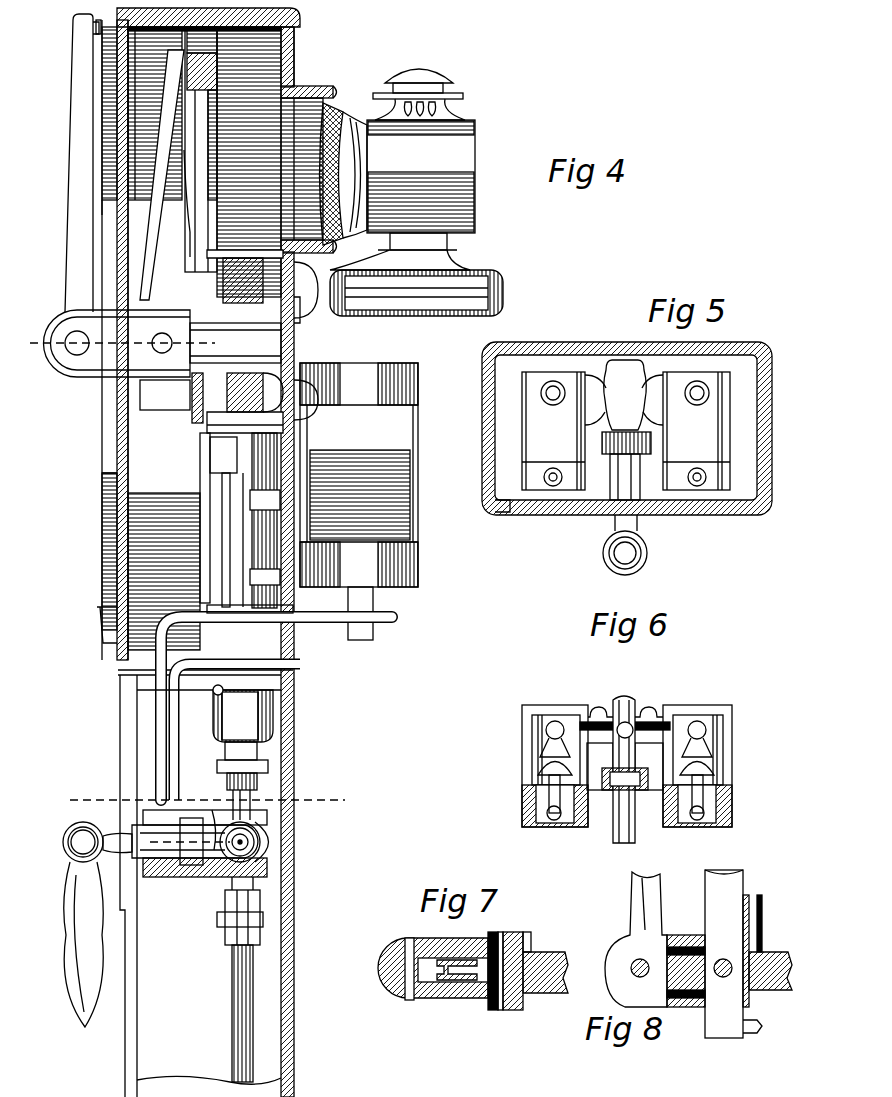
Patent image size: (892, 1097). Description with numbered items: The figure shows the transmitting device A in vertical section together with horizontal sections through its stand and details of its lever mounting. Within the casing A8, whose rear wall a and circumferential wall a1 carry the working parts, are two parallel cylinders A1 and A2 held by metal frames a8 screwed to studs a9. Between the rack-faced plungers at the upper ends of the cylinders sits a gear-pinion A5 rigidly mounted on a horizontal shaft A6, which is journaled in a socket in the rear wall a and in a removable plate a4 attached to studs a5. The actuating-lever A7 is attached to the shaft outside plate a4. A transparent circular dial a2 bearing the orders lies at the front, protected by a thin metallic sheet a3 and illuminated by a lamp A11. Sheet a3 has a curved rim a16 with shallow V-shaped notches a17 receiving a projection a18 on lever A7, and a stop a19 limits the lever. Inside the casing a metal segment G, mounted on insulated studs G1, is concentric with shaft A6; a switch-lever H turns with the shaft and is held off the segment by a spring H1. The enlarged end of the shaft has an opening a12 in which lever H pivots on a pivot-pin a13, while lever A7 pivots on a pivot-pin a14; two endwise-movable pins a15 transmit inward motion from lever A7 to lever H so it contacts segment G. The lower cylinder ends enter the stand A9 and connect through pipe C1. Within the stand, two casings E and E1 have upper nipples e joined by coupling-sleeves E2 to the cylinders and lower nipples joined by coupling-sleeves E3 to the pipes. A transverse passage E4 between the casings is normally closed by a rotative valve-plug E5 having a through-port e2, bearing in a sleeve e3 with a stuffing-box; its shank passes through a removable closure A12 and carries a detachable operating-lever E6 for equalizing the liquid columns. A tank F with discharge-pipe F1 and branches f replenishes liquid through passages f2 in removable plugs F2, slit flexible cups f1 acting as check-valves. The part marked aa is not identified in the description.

In FIG. 4, the main casing A is at (343, 346).
In FIG. 4, the cylinder A1 is at (240, 683).
In FIG. 4, the cylinder A2 is at (73, 237).
In FIG. 4, the gear-pinion A5 is at (276, 323).
In FIG. 4, the horizontal shaft A6 is at (235, 343).
In FIG. 7, the horizontal shaft A6 is at (557, 977).
In FIG. 8, the horizontal shaft A6 is at (782, 995).
In FIG. 7, the actuating-lever A7 is at (397, 973).
In FIG. 8, the actuating-lever A7 is at (667, 867).
In FIG. 4, the casing A8 is at (283, 13).
In FIG. 4, the stand A9 is at (288, 980).
In FIG. 5, the stand A9 is at (777, 497).
In FIG. 4, the lamp A11 is at (416, 192).
In FIG. 4, the removable plate or closure A12 is at (127, 733).
In FIG. 5, the removable plate or closure A12 is at (730, 528).
In FIG. 4, the rear wall a is at (293, 80).
In FIG. 4, the casing a1 is at (288, 47).
In FIG. 4, the circular dial a2 is at (132, 452).
In FIG. 4, the metallic sheet a3 is at (117, 417).
In FIG. 4, the removable plate a4 is at (193, 417).
In FIG. 4, the studs a5 is at (257, 250).
In FIG. 4, the metal frames a8 is at (247, 483).
In FIG. 4, the studs a9 is at (265, 520).
In FIG. 7, the opening a12 is at (477, 983).
In FIG. 8, the opening a12 is at (747, 930).
In FIG. 4, the pivot-pin a13 is at (153, 350).
In FIG. 7, the pivot-pin a13 is at (503, 947).
In FIG. 8, the pivot-pin a13 is at (730, 968).
In FIG. 4, the pivot-pin a14 is at (75, 357).
In FIG. 7, the pivot-pin a14 is at (410, 947).
In FIG. 8, the pivot-pin a14 is at (633, 970).
In FIG. 7, the endwise-movable pins a15 is at (453, 977).
In FIG. 8, the endwise-movable pins a15 is at (685, 948).
In FIG. 4, the curved flange or rim a16 is at (103, 132).
In FIG. 4, the V-shaped notches a17 is at (103, 145).
In FIG. 4, the projection a18 is at (94, 44).
In FIG. 4, the stop a19 is at (100, 613).
In FIG. 4, the cross member aa is at (137, 693).
In FIG. 4, the pipe C1 is at (233, 998).
In FIG. 5, the casing E is at (717, 447).
In FIG. 6, the casing E is at (733, 752).
In FIG. 4, the casing E1 is at (230, 888).
In FIG. 5, the casing E1 is at (537, 443).
In FIG. 6, the casing E1 is at (530, 763).
In FIG. 4, the coupling-sleeves E2 is at (265, 767).
In FIG. 4, the coupling-sleeves E3 is at (262, 918).
In FIG. 4, the transverse pipe or passage E4 is at (258, 840).
In FIG. 5, the transverse pipe or passage E4 is at (598, 380).
In FIG. 6, the transverse pipe or passage E4 is at (650, 710).
In FIG. 6, the rotative valve-plug E5 is at (600, 707).
In FIG. 4, the operating-lever E6 is at (78, 983).
In FIG. 5, the operating-lever E6 is at (647, 553).
In FIG. 4, the upper nipples e is at (257, 798).
In FIG. 5, the upper nipples e is at (556, 383).
In FIG. 6, the through-port e2 is at (627, 730).
In FIG. 4, the sleeve e3 is at (201, 815).
In FIG. 5, the sleeve e3 is at (645, 425).
In FIG. 6, the sleeve e3 is at (613, 753).
In FIG. 4, the tank F is at (400, 438).
In FIG. 4, the discharge-pipe F1 is at (333, 623).
In FIG. 4, the removable plug F2 is at (163, 880).
In FIG. 5, the removable plug F2 is at (587, 490).
In FIG. 6, the removable plug F2 is at (573, 817).
In FIG. 4, the branches f is at (168, 708).
In FIG. 5, the branches f is at (556, 487).
In FIG. 6, the flexible cups f1 is at (547, 750).
In FIG. 6, the passages f2 is at (550, 797).
In FIG. 4, the metal segment G is at (217, 186).
In FIG. 4, the studs G1 is at (296, 82).
In FIG. 4, the switch-lever H is at (162, 175).
In FIG. 7, the switch-lever H is at (515, 1010).
In FIG. 8, the switch-lever H is at (724, 954).
In FIG. 4, the spring H1 is at (190, 230).
In FIG. 7, the spring H1 is at (530, 938).
In FIG. 8, the spring H1 is at (760, 907).